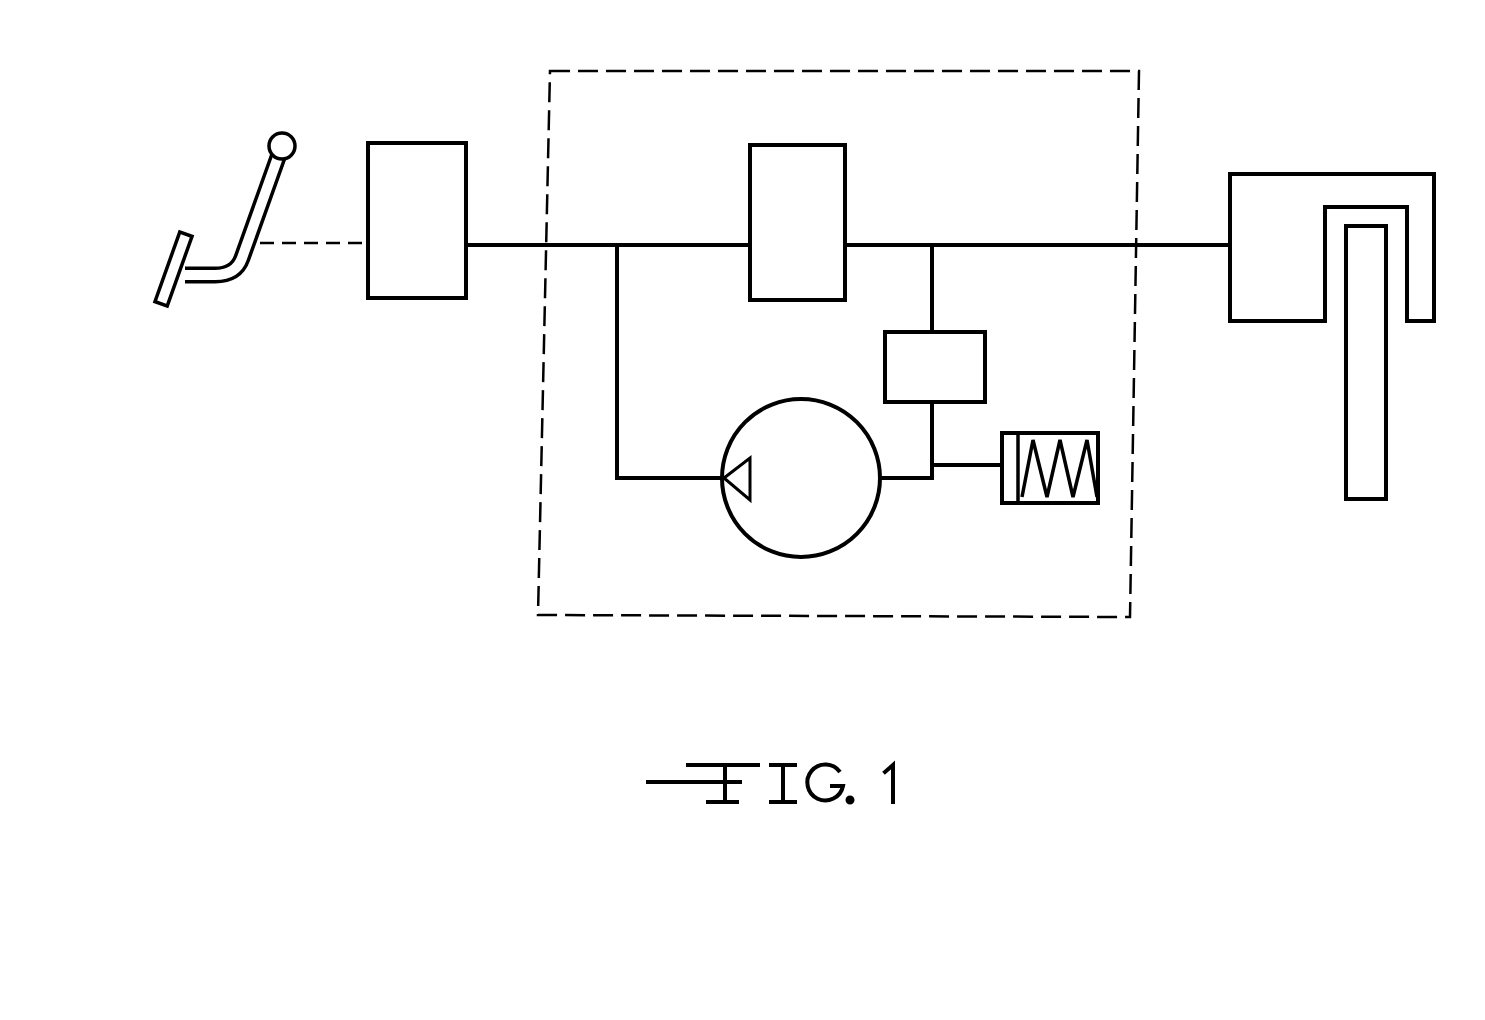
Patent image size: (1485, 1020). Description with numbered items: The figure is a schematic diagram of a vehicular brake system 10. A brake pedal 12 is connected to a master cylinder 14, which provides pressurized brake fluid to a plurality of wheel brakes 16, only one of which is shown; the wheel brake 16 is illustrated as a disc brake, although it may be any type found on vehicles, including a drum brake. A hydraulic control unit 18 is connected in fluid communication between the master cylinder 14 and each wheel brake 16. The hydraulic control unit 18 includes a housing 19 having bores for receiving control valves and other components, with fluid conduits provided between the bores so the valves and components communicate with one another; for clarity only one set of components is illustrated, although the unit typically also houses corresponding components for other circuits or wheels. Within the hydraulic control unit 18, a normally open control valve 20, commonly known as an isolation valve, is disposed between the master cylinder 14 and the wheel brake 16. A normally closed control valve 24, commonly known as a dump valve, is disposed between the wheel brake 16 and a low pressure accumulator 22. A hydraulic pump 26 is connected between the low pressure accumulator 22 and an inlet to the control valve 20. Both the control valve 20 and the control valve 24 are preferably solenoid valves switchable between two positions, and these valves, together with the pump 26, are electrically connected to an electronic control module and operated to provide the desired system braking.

The brake system 10 is at (1192, 94).
The brake pedal 12 is at (176, 300).
The master cylinder 14 is at (400, 143).
The wheel brake 16 is at (1397, 174).
The hydraulic control unit 18 is at (590, 622).
The housing 19 is at (775, 98).
The normally open control valve 20 is at (845, 183).
The low pressure accumulator 22 is at (1098, 482).
The normally closed control valve 24 is at (985, 365).
The hydraulic pump 26 is at (873, 513).